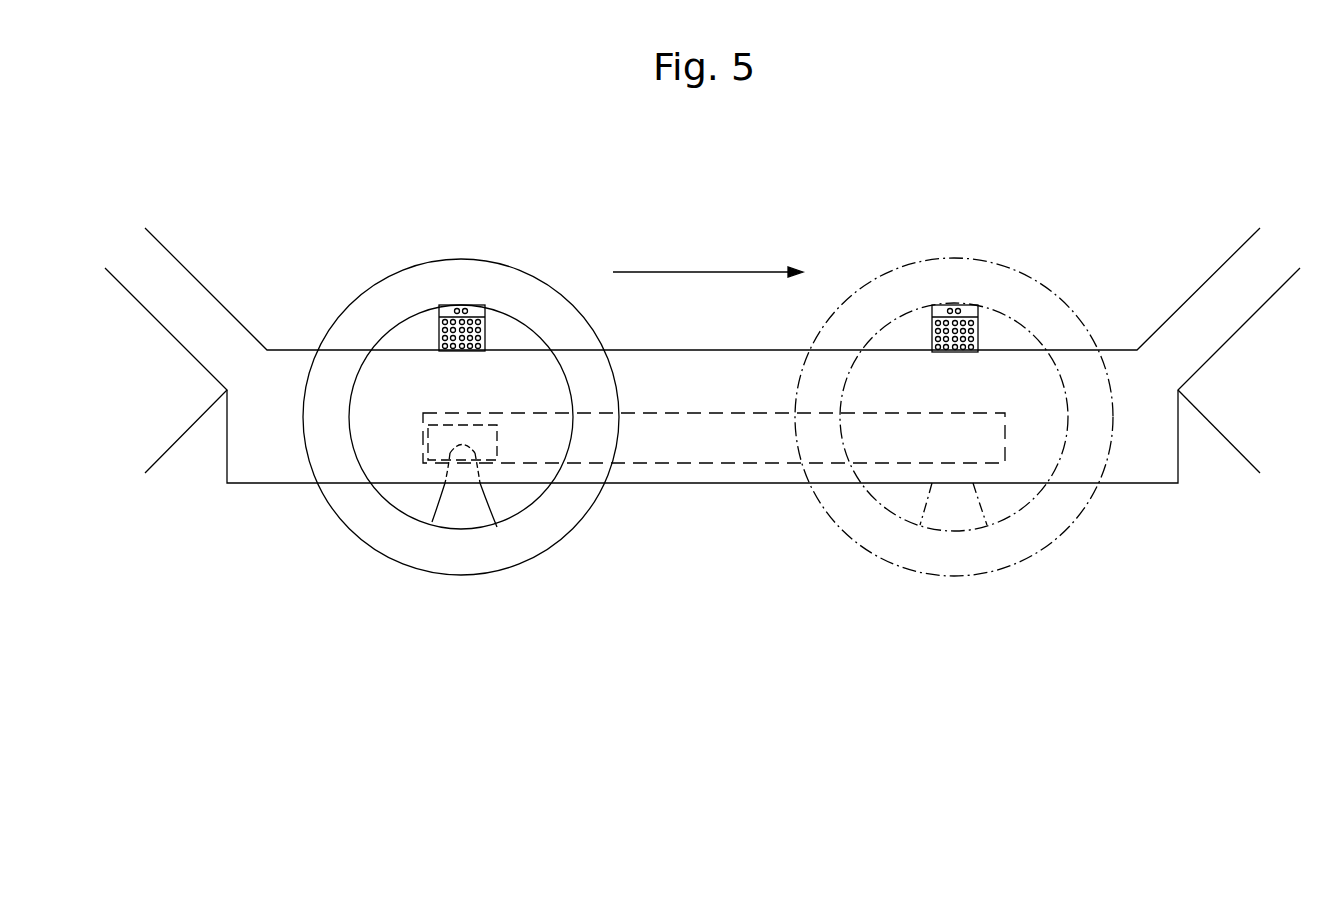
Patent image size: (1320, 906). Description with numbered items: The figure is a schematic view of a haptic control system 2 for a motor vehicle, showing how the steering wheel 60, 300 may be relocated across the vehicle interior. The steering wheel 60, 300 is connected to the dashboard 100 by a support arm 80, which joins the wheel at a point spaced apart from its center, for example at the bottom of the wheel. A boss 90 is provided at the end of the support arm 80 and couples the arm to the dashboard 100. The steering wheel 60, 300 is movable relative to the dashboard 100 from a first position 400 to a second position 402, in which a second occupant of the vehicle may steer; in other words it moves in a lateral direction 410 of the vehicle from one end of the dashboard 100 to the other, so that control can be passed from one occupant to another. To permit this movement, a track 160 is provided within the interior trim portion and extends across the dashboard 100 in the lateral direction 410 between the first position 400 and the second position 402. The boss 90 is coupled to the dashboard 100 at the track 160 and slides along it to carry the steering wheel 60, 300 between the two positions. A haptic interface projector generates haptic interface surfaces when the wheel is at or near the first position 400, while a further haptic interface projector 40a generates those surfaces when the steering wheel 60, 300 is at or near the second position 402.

The haptic control system 2 is at (521, 188).
The first position 400 is at (370, 288).
The steering wheel 60 is at (487, 376).
The steering wheel 300 is at (532, 274).
The lateral direction 410 is at (737, 272).
The second position 402 is at (944, 259).
The further haptic interface projector 40a is at (980, 323).
The boss 90 is at (441, 430).
The track 160 is at (702, 413).
The dashboard 100 is at (722, 472).
The support arm 80 is at (436, 514).